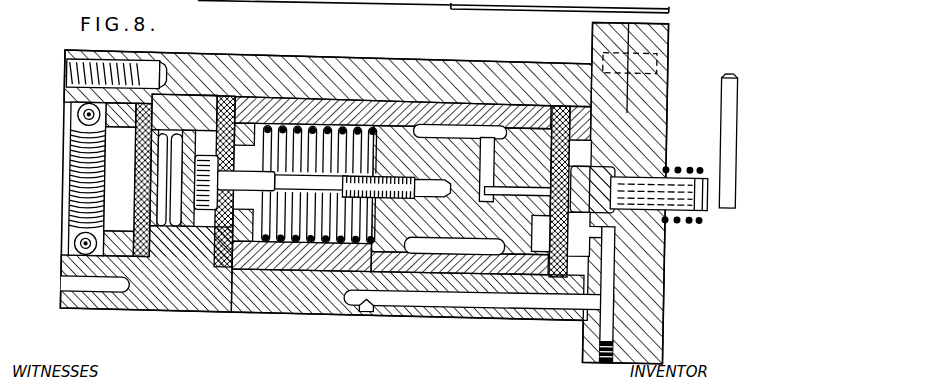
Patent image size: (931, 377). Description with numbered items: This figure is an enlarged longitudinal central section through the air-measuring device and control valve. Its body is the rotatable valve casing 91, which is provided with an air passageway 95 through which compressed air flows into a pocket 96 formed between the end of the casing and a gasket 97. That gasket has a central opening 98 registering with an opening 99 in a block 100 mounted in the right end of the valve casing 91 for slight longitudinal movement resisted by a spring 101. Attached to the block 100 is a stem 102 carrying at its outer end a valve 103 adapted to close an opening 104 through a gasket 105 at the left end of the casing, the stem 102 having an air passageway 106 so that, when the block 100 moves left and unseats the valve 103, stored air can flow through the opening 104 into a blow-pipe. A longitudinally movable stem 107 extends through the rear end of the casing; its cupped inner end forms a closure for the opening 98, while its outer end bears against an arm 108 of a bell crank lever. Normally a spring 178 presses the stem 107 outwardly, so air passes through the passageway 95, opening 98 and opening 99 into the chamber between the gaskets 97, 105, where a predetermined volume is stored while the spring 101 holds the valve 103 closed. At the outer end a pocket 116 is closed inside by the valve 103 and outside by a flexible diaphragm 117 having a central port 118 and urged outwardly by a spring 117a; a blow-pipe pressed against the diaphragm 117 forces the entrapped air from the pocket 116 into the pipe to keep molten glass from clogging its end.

The valve casing 91 is at (291, 315).
The air passageway 95 is at (473, 293).
The pocket 96 is at (580, 153).
The gasket 97 is at (547, 110).
The central opening 98 is at (570, 228).
The opening 99 is at (533, 190).
The block 100 is at (437, 218).
The spring 101 is at (260, 235).
The stem 102 is at (312, 180).
The valve 103 is at (181, 230).
The opening 104 is at (228, 97).
The gasket 105 is at (208, 203).
The air passageway 106 is at (247, 182).
The stem 107 is at (710, 213).
The arm 108 is at (730, 138).
The pocket 116 is at (133, 307).
The flexible diaphragm 117 is at (133, 212).
The spring 117a is at (163, 235).
The central port 118 is at (140, 180).
The spring 178 is at (680, 222).